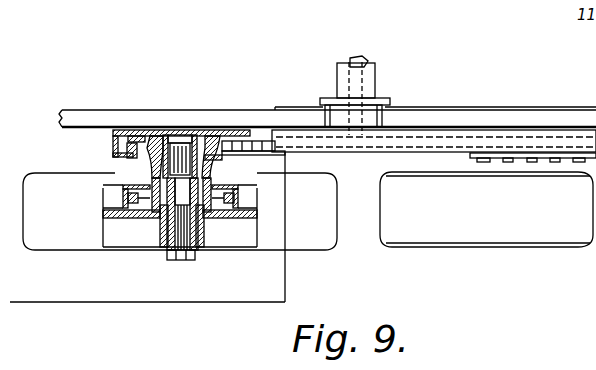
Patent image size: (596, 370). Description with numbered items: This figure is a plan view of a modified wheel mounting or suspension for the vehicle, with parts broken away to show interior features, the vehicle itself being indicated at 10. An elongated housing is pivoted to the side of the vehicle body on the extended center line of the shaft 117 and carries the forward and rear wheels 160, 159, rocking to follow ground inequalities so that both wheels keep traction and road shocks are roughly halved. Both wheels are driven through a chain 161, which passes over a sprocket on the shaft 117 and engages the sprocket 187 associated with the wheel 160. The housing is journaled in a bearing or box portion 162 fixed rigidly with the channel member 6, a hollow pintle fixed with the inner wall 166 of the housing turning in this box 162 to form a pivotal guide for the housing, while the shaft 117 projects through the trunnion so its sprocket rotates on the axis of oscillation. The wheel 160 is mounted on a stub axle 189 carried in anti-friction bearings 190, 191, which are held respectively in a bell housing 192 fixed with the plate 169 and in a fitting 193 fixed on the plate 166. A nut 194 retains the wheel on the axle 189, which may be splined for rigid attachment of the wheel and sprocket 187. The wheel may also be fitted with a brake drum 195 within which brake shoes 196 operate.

The channel member 6 is at (466, 91).
The vehicle frame 10 is at (15, 306).
The shaft 117 is at (356, 62).
The rear wheel 159 is at (471, 260).
The forward wheel 160 is at (268, 260).
The chain 161 is at (251, 141).
The bearing or box portion 162 is at (385, 120).
The inner wall 166 is at (184, 133).
The plate 169 is at (272, 152).
The sprocket 187 is at (143, 166).
The stub axle 189 is at (177, 240).
The anti-friction bearing 190 is at (162, 226).
The anti-friction bearing 191 is at (177, 130).
The bell housing 192 is at (208, 158).
The fitting 193 is at (157, 133).
The nut 194 is at (173, 268).
The brake drum 195 is at (127, 193).
The brake shoes 196 is at (127, 200).